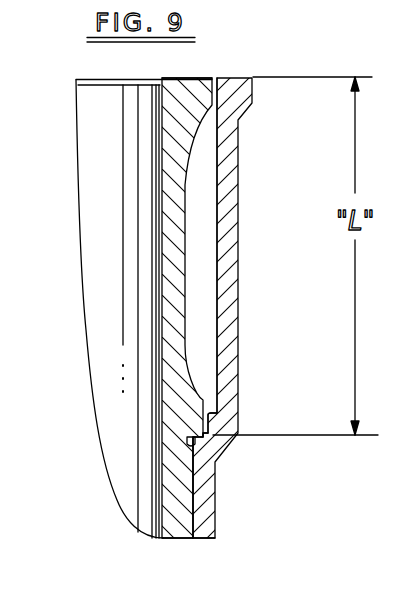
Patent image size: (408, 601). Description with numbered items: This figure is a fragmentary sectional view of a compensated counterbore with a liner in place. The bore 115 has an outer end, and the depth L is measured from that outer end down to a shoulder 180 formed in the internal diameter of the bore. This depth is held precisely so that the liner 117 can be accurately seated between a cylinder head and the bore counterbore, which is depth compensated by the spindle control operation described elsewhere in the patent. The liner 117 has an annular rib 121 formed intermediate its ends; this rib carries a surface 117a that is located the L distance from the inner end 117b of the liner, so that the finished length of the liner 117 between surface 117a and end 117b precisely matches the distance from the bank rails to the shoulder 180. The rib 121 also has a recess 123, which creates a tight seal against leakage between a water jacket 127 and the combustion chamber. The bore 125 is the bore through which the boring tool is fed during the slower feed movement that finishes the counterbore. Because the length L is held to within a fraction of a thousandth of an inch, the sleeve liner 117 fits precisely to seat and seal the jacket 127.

The liner 117 is at (168, 270).
The surface 117a is at (188, 78).
The inner end 117b is at (197, 433).
The bore 115 is at (244, 182).
The water jacket 127 is at (207, 312).
The annular rib 121 is at (188, 408).
The shoulder 180 is at (213, 423).
The recess 123 is at (192, 440).
The bore 125 is at (198, 540).